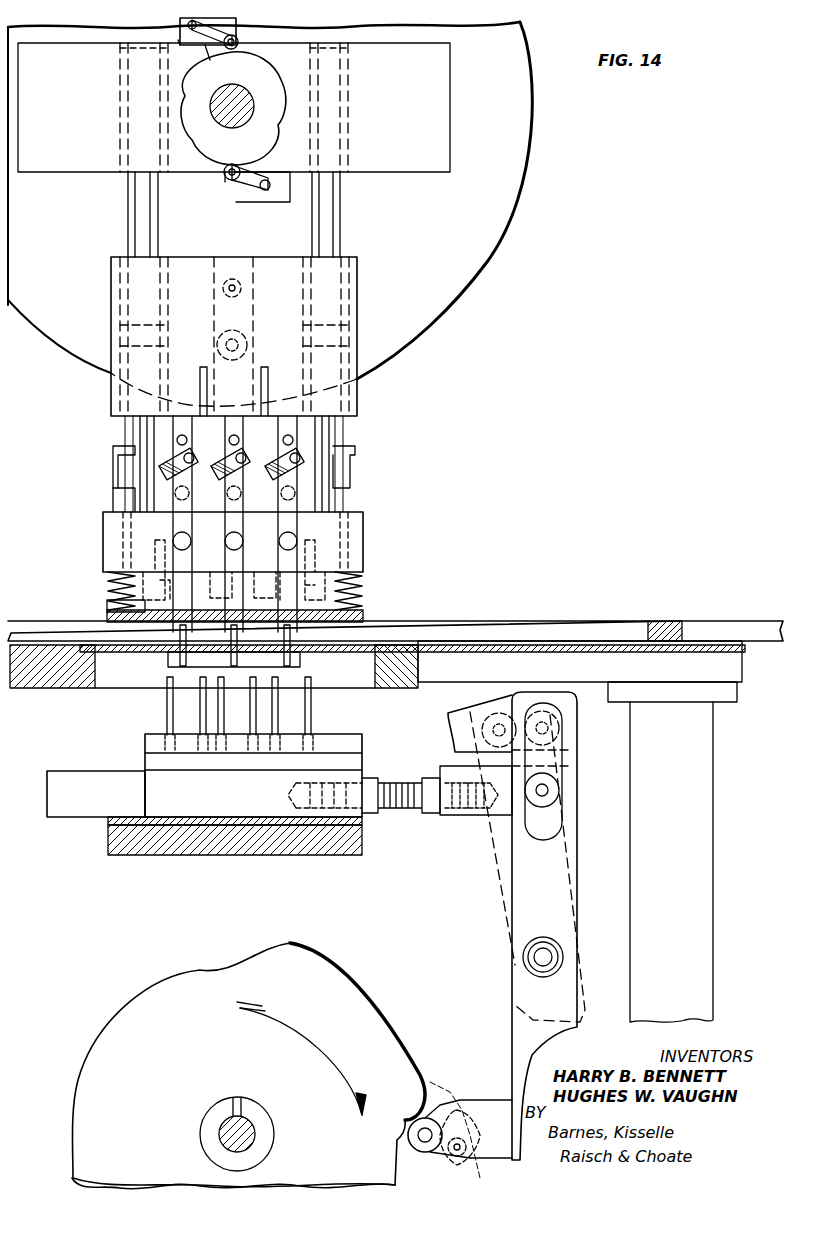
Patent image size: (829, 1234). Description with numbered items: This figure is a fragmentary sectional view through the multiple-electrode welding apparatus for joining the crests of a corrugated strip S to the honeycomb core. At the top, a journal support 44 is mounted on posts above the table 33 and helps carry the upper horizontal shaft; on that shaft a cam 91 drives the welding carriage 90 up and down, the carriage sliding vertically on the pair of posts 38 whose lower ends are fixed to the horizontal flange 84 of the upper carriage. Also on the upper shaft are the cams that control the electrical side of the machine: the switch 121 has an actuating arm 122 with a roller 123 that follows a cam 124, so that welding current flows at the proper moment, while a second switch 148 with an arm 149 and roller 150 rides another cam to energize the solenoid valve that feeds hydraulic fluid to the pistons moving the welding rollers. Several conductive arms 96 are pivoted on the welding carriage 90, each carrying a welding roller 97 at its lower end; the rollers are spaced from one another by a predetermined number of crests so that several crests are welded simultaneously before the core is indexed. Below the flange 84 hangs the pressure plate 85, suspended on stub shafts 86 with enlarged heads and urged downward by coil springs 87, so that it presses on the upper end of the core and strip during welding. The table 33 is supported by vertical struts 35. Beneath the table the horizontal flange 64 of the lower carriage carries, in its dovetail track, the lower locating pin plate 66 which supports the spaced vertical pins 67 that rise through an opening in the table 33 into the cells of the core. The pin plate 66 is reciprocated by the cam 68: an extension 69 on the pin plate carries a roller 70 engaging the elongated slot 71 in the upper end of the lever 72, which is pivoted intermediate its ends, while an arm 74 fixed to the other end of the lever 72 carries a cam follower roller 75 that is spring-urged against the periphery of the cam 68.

The table 33 is at (35, 675).
The vertical struts 35 is at (700, 952).
The posts 38 is at (330, 232).
The journal support 44 is at (430, 100).
The horizontal flange 64 is at (340, 845).
The lower locating pin plate 66 is at (80, 782).
The pins 67 is at (310, 718).
The cam 68 is at (343, 980).
The extension 69 is at (406, 780).
The roller 70 is at (548, 785).
The elongated slot 71 is at (560, 815).
The lever 72 is at (570, 870).
The arm 74 is at (470, 1105).
The cam follower roller 75 is at (428, 1120).
The horizontal flange 84 is at (355, 548).
The pressure plate 85 is at (360, 605).
The stub shafts 86 is at (108, 606).
The coil springs 87 is at (243, 672).
The welding carriage 90 is at (358, 282).
The cam 91 is at (465, 257).
The arm 96 is at (290, 618).
The welding roller 97 is at (295, 660).
The switch 121 is at (245, 195).
The actuating arm 122 is at (250, 172).
The roller 123 is at (224, 178).
The cam 124 is at (257, 80).
The switch 148 is at (185, 42).
The arm 149 is at (210, 50).
The roller 150 is at (240, 44).
The strip S is at (745, 621).